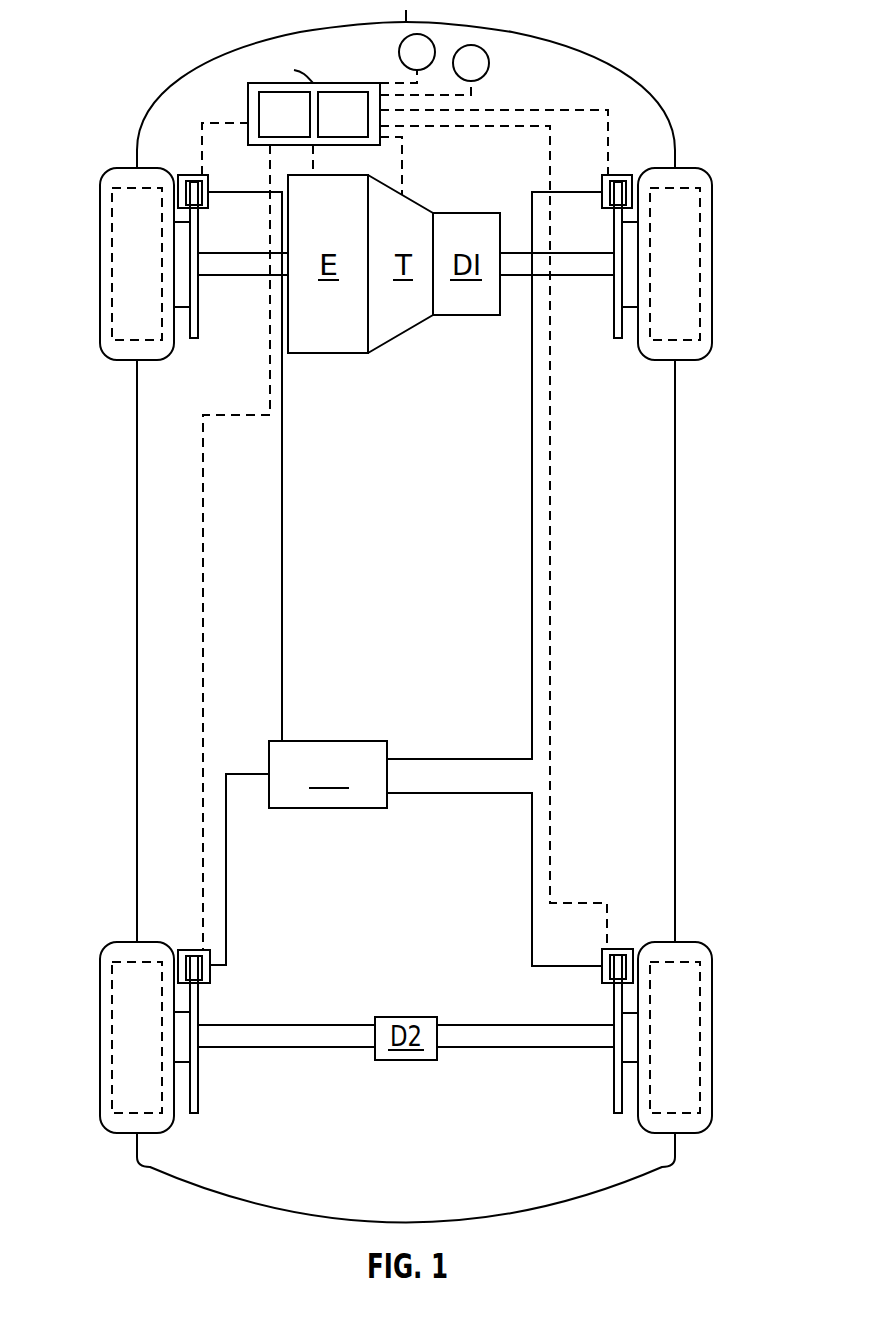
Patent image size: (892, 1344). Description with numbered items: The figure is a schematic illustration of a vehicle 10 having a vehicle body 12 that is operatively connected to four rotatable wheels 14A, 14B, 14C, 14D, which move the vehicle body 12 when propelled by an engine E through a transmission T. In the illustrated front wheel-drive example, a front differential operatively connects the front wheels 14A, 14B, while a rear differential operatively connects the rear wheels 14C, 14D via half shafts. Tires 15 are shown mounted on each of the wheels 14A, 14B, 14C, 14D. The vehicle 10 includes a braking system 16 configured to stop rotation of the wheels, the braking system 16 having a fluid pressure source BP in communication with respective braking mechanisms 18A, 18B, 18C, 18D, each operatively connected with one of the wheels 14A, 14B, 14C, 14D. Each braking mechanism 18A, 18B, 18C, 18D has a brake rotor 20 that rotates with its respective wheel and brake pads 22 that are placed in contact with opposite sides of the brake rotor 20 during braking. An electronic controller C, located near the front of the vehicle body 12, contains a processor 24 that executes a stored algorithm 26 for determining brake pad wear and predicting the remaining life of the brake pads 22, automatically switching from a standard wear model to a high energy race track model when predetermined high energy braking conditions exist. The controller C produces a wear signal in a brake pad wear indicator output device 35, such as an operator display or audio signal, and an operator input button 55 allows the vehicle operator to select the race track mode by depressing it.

The vehicle 10 is at (125, 47).
The vehicle body 12 is at (668, 101).
The front wheel 14A is at (110, 220).
The front wheel 14B is at (702, 215).
The rear wheel 14C is at (110, 1015).
The rear wheel 14D is at (702, 1003).
The tire 15 is at (99, 267).
The braking system 16 is at (365, 723).
The braking mechanism 18A is at (185, 173).
The braking mechanism 18B is at (625, 172).
The braking mechanism 18C is at (243, 963).
The braking mechanism 18D is at (625, 945).
The brake rotor 20 is at (198, 308).
The brake pads 22 is at (200, 208).
The processor 24 is at (249, 122).
The stored algorithm 26 is at (348, 91).
The brake pad wear indicator output device 35 is at (431, 41).
The operator input button 55 is at (489, 64).